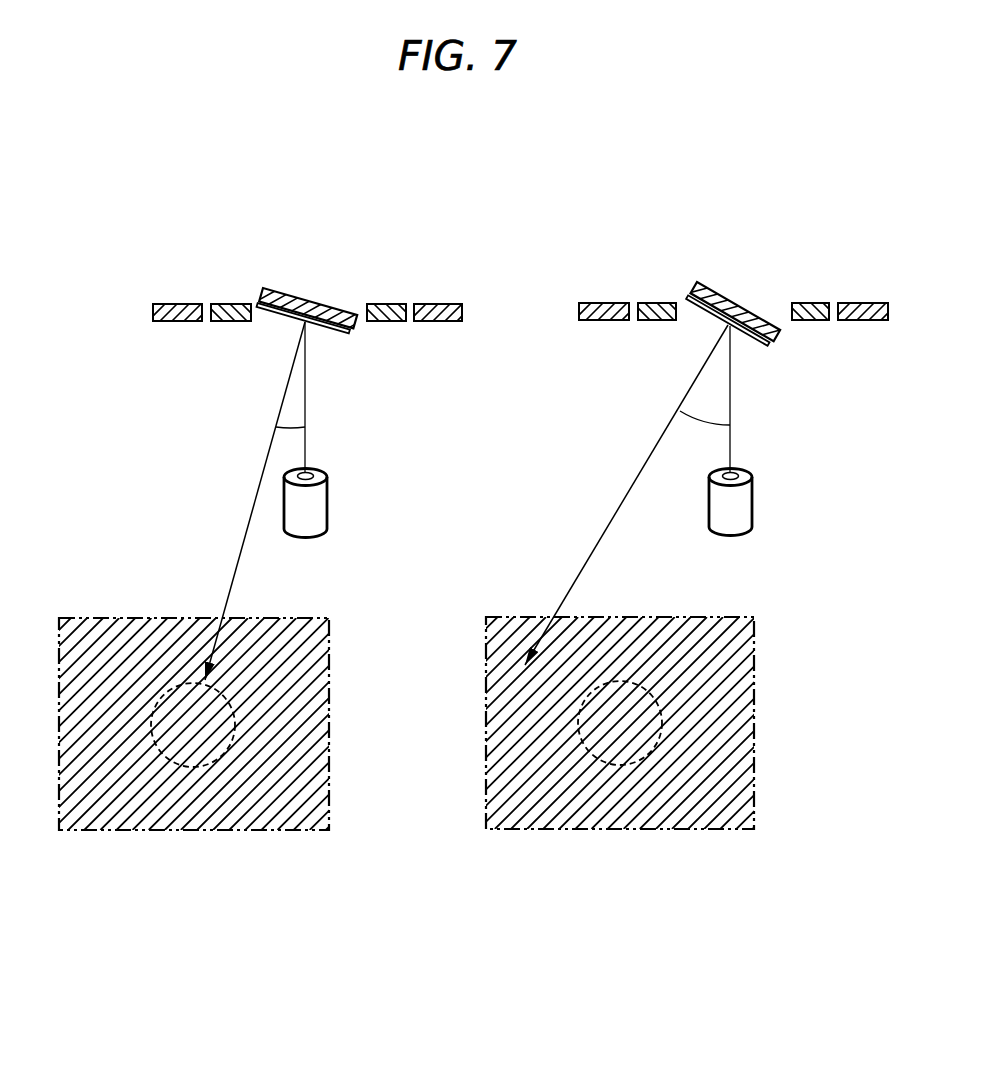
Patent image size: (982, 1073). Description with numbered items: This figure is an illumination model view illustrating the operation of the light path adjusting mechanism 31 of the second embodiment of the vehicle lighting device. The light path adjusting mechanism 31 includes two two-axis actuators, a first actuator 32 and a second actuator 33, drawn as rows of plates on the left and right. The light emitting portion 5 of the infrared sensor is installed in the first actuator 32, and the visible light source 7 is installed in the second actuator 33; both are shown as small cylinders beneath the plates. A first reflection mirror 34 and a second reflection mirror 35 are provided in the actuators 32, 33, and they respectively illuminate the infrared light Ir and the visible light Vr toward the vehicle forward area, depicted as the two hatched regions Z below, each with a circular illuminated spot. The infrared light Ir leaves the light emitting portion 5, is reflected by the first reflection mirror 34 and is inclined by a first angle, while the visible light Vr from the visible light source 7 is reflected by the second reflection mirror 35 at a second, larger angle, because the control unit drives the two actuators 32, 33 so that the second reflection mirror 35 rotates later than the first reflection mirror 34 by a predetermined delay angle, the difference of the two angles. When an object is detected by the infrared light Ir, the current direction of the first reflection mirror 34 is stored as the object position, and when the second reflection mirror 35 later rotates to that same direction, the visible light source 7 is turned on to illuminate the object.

The light emitting portion 5 is at (328, 494).
The visible light source 7 is at (753, 494).
The light path adjusting mechanism 31 is at (455, 298).
The first actuator 32 is at (173, 302).
The second actuator 33 is at (863, 302).
The first reflection mirror 34 is at (273, 324).
The second reflection mirror 35 is at (706, 322).
The infrared light Ir is at (253, 500).
The visible light Vr is at (632, 482).
The irradiation target region Z is at (194, 832).